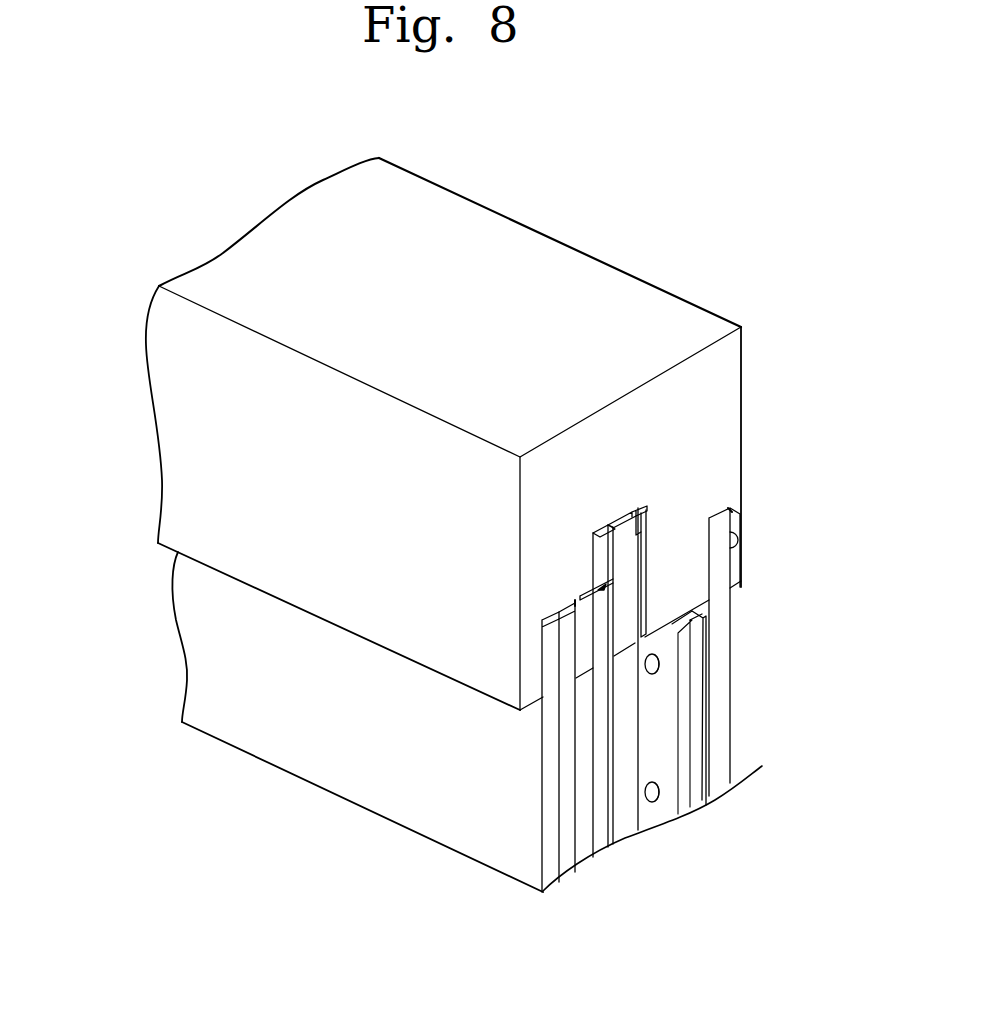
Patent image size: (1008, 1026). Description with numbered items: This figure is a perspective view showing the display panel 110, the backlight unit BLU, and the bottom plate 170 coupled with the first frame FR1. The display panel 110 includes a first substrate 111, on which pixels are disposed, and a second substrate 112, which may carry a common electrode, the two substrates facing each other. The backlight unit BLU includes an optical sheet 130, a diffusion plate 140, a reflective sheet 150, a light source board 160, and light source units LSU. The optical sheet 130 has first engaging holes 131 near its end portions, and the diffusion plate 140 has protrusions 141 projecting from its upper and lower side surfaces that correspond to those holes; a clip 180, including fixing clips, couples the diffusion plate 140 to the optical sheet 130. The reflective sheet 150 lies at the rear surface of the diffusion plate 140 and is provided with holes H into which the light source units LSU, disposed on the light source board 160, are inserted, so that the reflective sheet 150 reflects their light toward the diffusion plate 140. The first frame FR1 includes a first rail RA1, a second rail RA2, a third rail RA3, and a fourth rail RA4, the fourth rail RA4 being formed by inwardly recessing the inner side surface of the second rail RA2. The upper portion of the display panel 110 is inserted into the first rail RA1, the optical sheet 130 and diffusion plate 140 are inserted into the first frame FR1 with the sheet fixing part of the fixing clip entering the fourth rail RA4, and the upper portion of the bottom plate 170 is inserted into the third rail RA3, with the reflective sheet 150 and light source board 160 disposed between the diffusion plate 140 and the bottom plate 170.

The first frame FR1 is at (493, 212).
The backlight unit BLU is at (495, 761).
The display panel 110 is at (612, 945).
The first substrate 111 is at (567, 873).
The second substrate 112 is at (530, 875).
The optical sheet 130 is at (600, 843).
The first engaging hole 131 is at (645, 585).
The diffusion plate 140 is at (623, 838).
The protrusion 141 is at (642, 515).
The reflective sheet 150 is at (685, 807).
The light source board 160 is at (698, 800).
The bottom plate 170 is at (720, 665).
The clip 180 is at (600, 536).
The hole H is at (661, 668).
The light source unit LSU is at (657, 775).
The first rail RA1 is at (575, 603).
The second rail RA2 is at (729, 510).
The third rail RA3 is at (728, 540).
The fourth rail RA4 is at (582, 592).